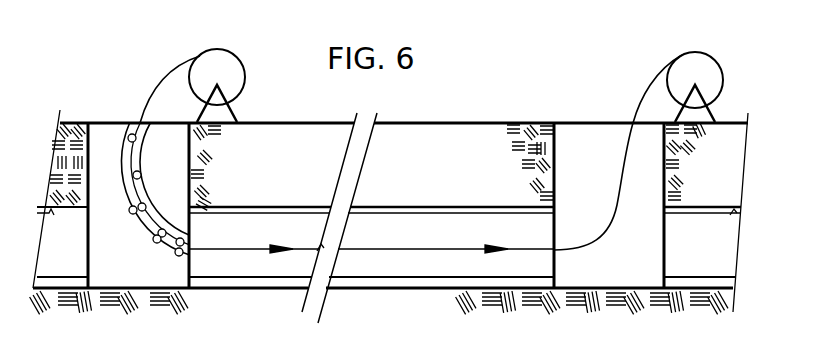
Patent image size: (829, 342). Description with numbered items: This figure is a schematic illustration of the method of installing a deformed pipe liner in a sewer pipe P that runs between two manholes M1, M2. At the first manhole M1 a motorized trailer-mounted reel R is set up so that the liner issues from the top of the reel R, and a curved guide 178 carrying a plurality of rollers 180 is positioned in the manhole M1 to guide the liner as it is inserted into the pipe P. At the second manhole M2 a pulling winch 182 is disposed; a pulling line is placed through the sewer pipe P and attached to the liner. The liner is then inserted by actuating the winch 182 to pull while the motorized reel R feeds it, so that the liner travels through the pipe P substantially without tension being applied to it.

The manhole M1 is at (91, 136).
The manhole M2 is at (556, 131).
The motorized reel R is at (241, 91).
The pulling winch 182 is at (693, 52).
The curved guide 178 is at (141, 226).
The rollers 180 is at (170, 250).
The sewer pipe P is at (358, 274).